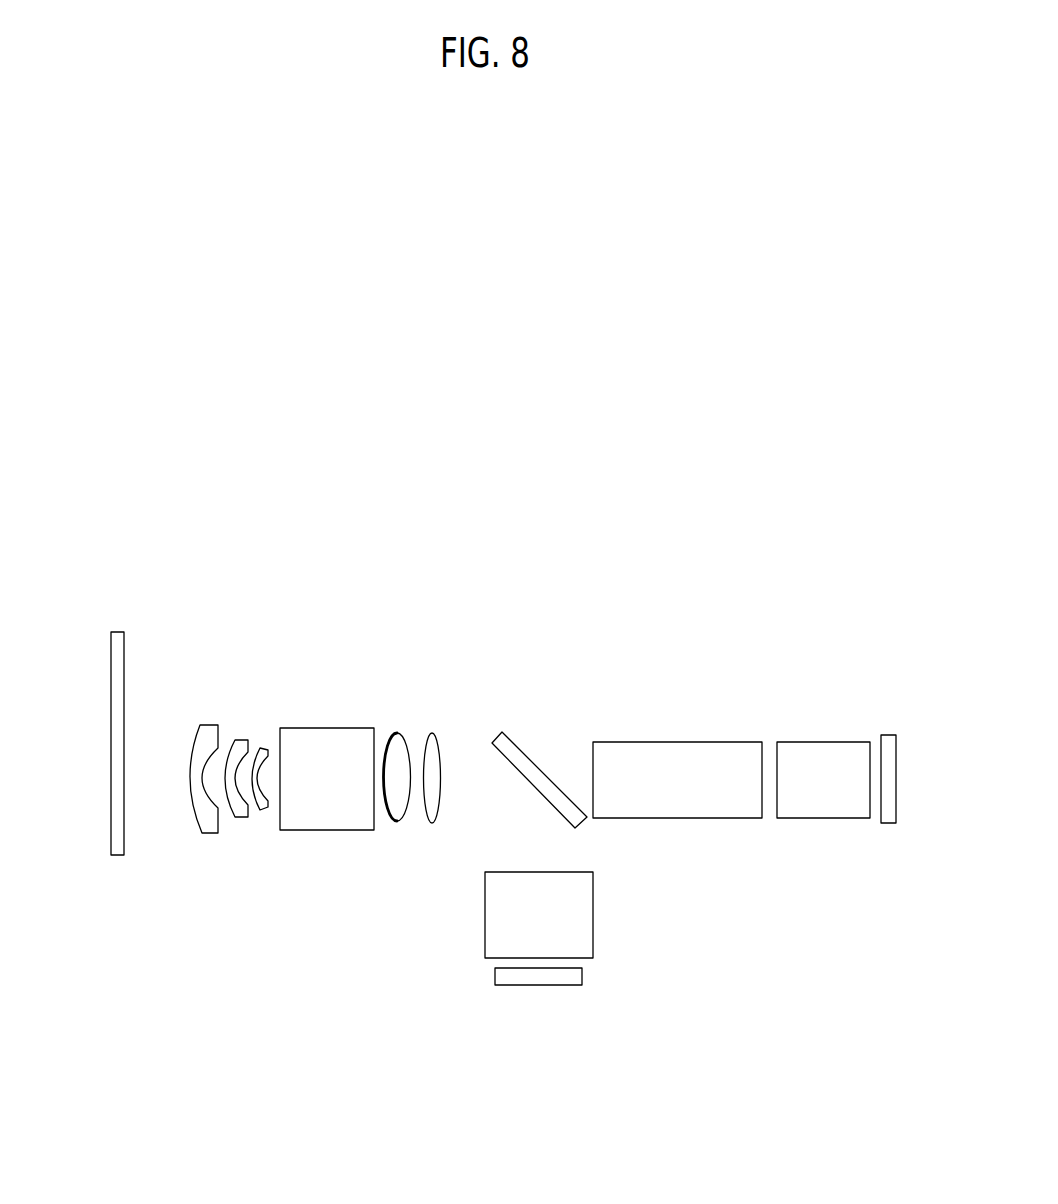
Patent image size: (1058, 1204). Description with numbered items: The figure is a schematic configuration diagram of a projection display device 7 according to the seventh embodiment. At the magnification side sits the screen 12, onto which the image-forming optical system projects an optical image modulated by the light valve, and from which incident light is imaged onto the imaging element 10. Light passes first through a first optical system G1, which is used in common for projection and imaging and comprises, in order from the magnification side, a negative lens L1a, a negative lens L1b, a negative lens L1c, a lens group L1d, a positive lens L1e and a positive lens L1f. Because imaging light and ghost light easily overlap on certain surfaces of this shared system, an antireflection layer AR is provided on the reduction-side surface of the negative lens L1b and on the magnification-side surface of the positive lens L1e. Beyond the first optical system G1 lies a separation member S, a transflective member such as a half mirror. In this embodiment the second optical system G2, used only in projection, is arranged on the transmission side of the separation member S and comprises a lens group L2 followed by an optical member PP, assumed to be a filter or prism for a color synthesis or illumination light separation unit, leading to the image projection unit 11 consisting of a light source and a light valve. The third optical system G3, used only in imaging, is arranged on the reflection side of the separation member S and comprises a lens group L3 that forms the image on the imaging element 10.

The projection display device 7 is at (557, 470).
The screen 12 is at (118, 788).
The first optical system G1 is at (447, 533).
The negative lens L1a is at (210, 722).
The negative lens L1b is at (241, 739).
The negative lens L1c is at (268, 746).
The lens group L1d is at (333, 727).
The positive lens L1e is at (397, 736).
The positive lens L1f is at (432, 737).
The antireflection layer AR is at (249, 795).
The separation member S is at (530, 760).
The second optical system G2 is at (850, 633).
The lens group L2 is at (698, 747).
The optical member PP is at (823, 747).
The image projection unit 11 is at (892, 800).
The third optical system G3 is at (683, 895).
The lens group L3 is at (594, 918).
The imaging element 10 is at (520, 977).